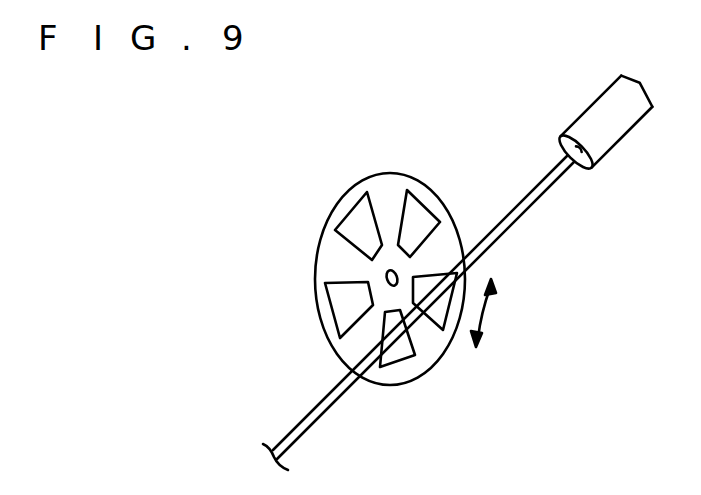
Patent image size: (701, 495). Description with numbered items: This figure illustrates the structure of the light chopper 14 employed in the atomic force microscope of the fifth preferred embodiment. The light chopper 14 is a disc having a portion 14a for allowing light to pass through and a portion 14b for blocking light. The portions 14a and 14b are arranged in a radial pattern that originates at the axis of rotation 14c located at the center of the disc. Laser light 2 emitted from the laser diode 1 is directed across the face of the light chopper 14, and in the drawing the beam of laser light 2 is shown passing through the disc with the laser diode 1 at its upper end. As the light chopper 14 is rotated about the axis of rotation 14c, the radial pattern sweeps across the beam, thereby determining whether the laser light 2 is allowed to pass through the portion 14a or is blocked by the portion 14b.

The laser diode 1 is at (593, 118).
The laser light 2 is at (515, 218).
The light chopper 14 is at (346, 249).
The portion for allowing light to pass through 14a is at (354, 222).
The portion for blocking light 14b is at (332, 267).
The axis of rotation 14c is at (390, 289).